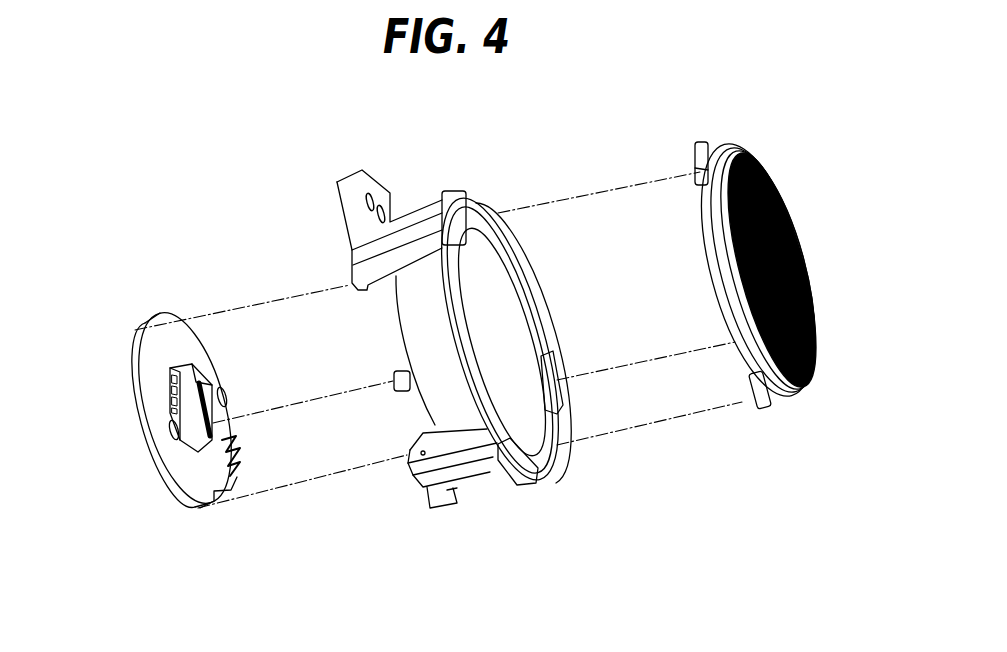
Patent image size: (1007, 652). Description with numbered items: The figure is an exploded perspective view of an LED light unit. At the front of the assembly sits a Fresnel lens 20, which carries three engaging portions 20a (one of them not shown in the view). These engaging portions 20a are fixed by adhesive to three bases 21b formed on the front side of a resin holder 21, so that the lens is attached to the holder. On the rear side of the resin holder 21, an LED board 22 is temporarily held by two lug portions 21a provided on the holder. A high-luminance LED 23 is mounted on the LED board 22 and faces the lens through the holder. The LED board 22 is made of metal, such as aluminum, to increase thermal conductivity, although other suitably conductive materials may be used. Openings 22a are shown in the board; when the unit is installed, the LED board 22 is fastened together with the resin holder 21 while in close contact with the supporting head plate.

The Fresnel lens 20 is at (790, 388).
The engaging portions 20a is at (700, 160).
The resin holder 21 is at (518, 250).
The lug portions 21a is at (362, 268).
The bases 21b is at (447, 191).
The LED board 22 is at (194, 478).
The plate slots 22a is at (226, 388).
The high-luminance LED 23 is at (185, 372).